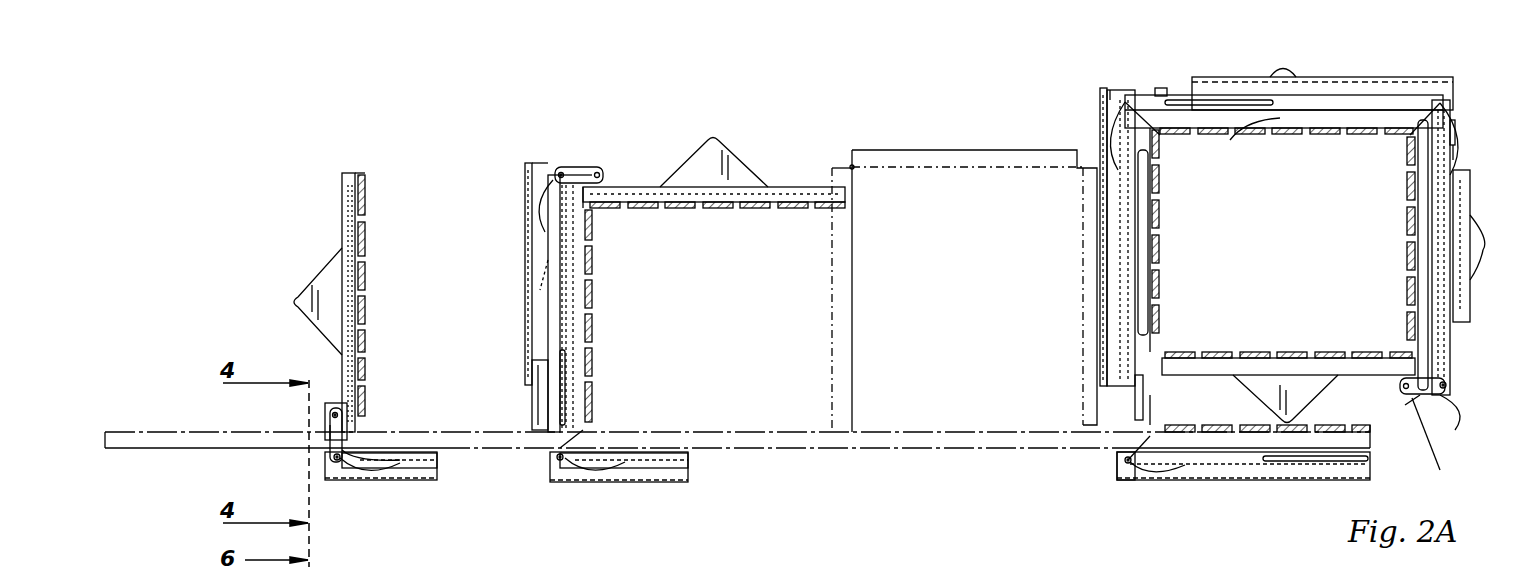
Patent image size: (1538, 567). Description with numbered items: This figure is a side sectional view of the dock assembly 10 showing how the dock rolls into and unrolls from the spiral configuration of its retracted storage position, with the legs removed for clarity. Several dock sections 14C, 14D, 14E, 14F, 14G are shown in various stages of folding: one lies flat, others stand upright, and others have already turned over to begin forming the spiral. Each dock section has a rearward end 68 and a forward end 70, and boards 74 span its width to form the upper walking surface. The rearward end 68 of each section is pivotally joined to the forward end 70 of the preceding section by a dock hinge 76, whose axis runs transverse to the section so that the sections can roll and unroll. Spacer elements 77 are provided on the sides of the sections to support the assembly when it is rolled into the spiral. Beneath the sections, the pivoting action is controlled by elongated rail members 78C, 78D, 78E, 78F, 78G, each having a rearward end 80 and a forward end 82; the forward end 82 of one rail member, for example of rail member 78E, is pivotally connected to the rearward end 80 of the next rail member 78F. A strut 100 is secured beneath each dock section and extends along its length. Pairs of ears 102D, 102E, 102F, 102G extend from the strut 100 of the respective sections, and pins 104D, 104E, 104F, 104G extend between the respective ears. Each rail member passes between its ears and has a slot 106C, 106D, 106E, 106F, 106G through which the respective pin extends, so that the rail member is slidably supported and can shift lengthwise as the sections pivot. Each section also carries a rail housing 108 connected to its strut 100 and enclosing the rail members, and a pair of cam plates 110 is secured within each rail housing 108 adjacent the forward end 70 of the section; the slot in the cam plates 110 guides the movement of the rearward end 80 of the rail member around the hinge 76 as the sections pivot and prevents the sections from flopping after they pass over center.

The dock assembly 10 is at (952, 92).
The dock section 14C is at (1300, 495).
The dock section 14D is at (1162, 281).
The dock section 14E is at (862, 303).
The dock section 14F is at (595, 323).
The dock section 14G is at (366, 304).
The rearward end 68 is at (863, 168).
The forward end 70 is at (848, 208).
The boards 74 is at (366, 228).
The dock hinge 76 is at (852, 165).
The spacer elements 77 is at (305, 285).
The rail member 78C is at (1245, 468).
The rail member 78D is at (1145, 300).
The rail member 78E is at (648, 470).
The rail member 78F is at (420, 470).
The rail member 78G is at (325, 418).
The rearward end 80 is at (578, 425).
The forward end 82 is at (375, 430).
The strut 100 is at (352, 340).
The ears 102D is at (1150, 392).
The ears 102E is at (1155, 92).
The ears 102F is at (540, 410).
The ears 102G is at (342, 380).
The pin 104D is at (1160, 409).
The pin 104E is at (1165, 88).
The pin 104F is at (540, 413).
The pin 104G is at (392, 395).
The slot 106C is at (1360, 475).
The slot 106D is at (1147, 325).
The slot 106E is at (1245, 98).
The slot 106F is at (565, 365).
The slot 106G is at (330, 455).
The rail housing 108 is at (535, 240).
The cam plates 110 is at (525, 212).